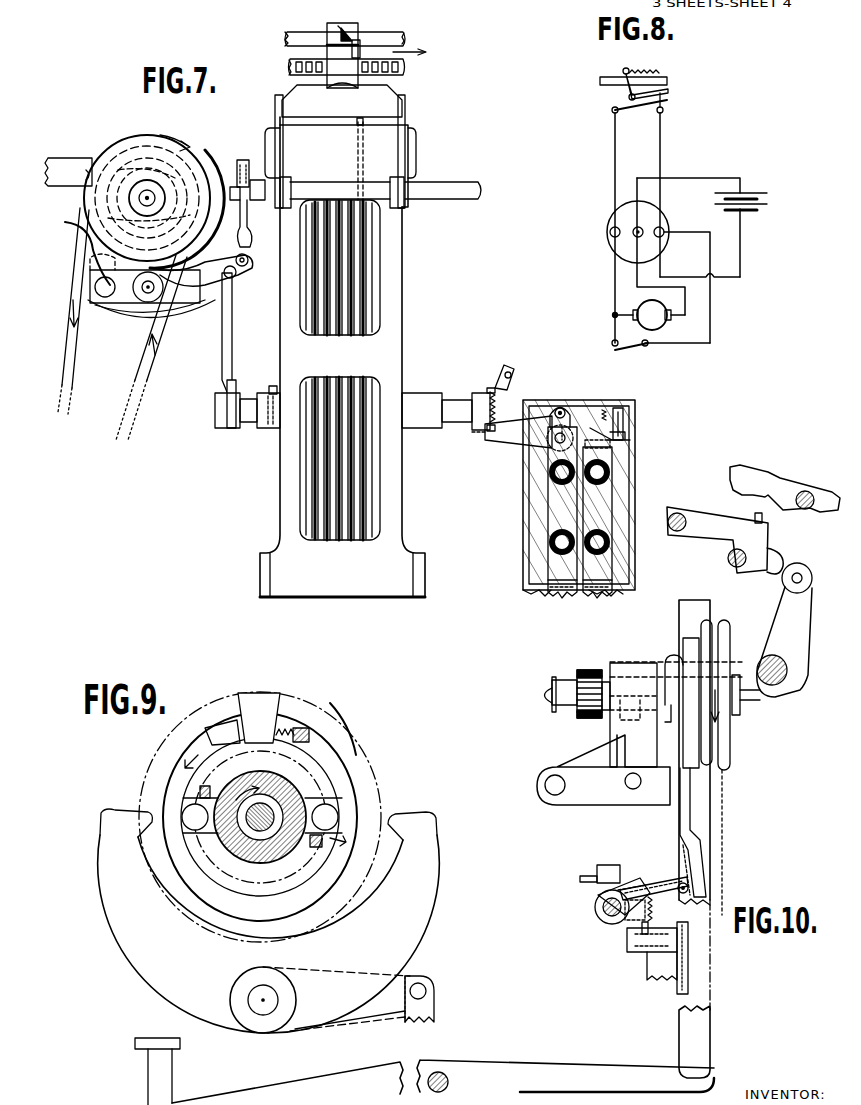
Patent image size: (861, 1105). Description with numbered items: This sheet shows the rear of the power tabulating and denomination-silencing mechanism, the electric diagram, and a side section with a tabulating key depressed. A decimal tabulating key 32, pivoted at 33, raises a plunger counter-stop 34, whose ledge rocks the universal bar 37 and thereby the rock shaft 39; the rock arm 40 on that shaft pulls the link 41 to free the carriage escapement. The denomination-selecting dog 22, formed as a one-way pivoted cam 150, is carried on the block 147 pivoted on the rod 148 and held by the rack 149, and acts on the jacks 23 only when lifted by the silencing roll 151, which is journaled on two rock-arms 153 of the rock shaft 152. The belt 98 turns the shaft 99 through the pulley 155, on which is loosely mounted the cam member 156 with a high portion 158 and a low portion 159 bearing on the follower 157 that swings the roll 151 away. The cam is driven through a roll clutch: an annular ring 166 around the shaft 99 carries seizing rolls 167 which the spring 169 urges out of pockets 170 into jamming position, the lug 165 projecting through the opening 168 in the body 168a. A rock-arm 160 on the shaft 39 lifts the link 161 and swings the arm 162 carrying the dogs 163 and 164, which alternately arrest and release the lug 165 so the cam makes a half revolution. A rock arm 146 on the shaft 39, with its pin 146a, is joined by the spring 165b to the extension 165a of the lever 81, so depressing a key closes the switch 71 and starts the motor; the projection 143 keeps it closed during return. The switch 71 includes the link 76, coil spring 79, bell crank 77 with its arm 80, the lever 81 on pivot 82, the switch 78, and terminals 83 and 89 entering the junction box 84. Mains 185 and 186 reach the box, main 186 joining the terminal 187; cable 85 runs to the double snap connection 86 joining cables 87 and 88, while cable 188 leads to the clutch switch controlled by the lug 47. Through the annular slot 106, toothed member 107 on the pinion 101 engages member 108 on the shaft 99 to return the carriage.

In FIG. 7, the one-way pivoted cam 150 is at (346, 31).
In FIG. 7, the rod 148 is at (406, 42).
In FIG. 10, the rod 148 is at (680, 516).
In FIG. 7, the block 147 is at (344, 55).
In FIG. 10, the block 147 is at (725, 540).
In FIG. 7, the rack 149 is at (405, 68).
In FIG. 10, the rack 149 is at (730, 558).
In FIG. 7, the silencing roll 151 is at (342, 101).
In FIG. 10, the silencing roll 151 is at (803, 570).
In FIG. 7, the rock-arms 153 is at (277, 112).
In FIG. 10, the rock-arms 153 is at (776, 643).
In FIG. 7, the plunger counter-stops 34 is at (356, 128).
In FIG. 10, the plunger counter-stops 34 is at (705, 868).
In FIG. 7, the rock shaft 152 is at (448, 199).
In FIG. 10, the rock shaft 152 is at (773, 683).
In FIG. 7, the pulley 155 is at (122, 150).
In FIG. 10, the pulley 155 is at (731, 735).
In FIG. 7, the cam member 156 is at (147, 198).
In FIG. 10, the cam member 156 is at (675, 658).
In FIG. 7, the high portion 158 is at (129, 198).
In FIG. 9, the high portion 158 is at (296, 925).
In FIG. 7, the low portion 159 is at (159, 198).
In FIG. 9, the low portion 159 is at (221, 732).
In FIG. 7, the follower 157 is at (80, 190).
In FIG. 10, the follower 157 is at (683, 680).
In FIG. 7, the shaft 99 is at (147, 205).
In FIG. 9, the shaft 99 is at (262, 862).
In FIG. 7, the lug 165 is at (185, 215).
In FIG. 9, the lug 165 is at (259, 718).
In FIG. 7, the dog 163 is at (240, 180).
In FIG. 9, the dog 163 is at (353, 922).
In FIG. 7, the dog 164 is at (70, 240).
In FIG. 9, the dog 164 is at (183, 921).
In FIG. 10, the dog 164 is at (690, 730).
In FIG. 7, the arm 162 is at (210, 302).
In FIG. 9, the arm 162 is at (380, 1010).
In FIG. 7, the link 161 is at (236, 323).
In FIG. 9, the link 161 is at (436, 1006).
In FIG. 10, the link 161 is at (700, 846).
In FIG. 7, the belt 98 is at (150, 374).
In FIG. 10, the belt 98 is at (724, 778).
In FIG. 7, the rock-arm 160 is at (236, 402).
In FIG. 10, the rock-arm 160 is at (660, 878).
In FIG. 7, the link 41 is at (273, 387).
In FIG. 7, the rock shaft 39 is at (232, 428).
In FIG. 10, the rock shaft 39 is at (610, 920).
In FIG. 7, the rock arm 40 is at (266, 428).
In FIG. 7, the rock arm 146 is at (488, 392).
In FIG. 10, the rock arm 146 is at (618, 870).
In FIG. 7, the pin 146a is at (510, 372).
In FIG. 10, the pin 146a is at (590, 880).
In FIG. 7, the spring 165b is at (446, 421).
In FIG. 7, the extension 165a is at (505, 440).
In FIG. 7, the bell crank projection 143 is at (566, 400).
In FIG. 10, the bell crank projection 143 is at (630, 925).
In FIG. 7, the coil spring 79 is at (606, 408).
In FIG. 8, the coil spring 79 is at (645, 72).
In FIG. 7, the lever 81 is at (575, 428).
In FIG. 7, the link 76 is at (626, 416).
In FIG. 8, the link 76 is at (606, 77).
In FIG. 7, the bell crank 77 is at (630, 434).
In FIG. 8, the bell crank 77 is at (628, 97).
In FIG. 7, the pivot 82 is at (556, 443).
In FIG. 10, the pivot 82 is at (650, 950).
In FIG. 7, the switch 78 is at (590, 502).
In FIG. 8, the switch 78 is at (658, 142).
In FIG. 7, the electric terminal 83 is at (556, 600).
In FIG. 8, the electric terminal 83 is at (610, 238).
In FIG. 10, the electric terminal 83 is at (680, 985).
In FIG. 7, the terminal 89 is at (597, 600).
In FIG. 8, the terminal 89 is at (664, 237).
In FIG. 8, the arm 80 is at (665, 90).
In FIG. 8, the switch 71 is at (668, 103).
In FIG. 8, the main 186 is at (716, 170).
In FIG. 8, the junction box 84 is at (610, 218).
In FIG. 8, the terminal 187 is at (644, 228).
In FIG. 8, the main 185 is at (742, 258).
In FIG. 8, the cable 85 is at (614, 270).
In FIG. 8, the cable 88 is at (615, 312).
In FIG. 8, the double snap connection 86 is at (613, 315).
In FIG. 8, the cable 87 is at (614, 332).
In FIG. 8, the cable 188 is at (712, 318).
In FIG. 8, the lug / clutch switch 47 is at (635, 348).
In FIG. 9, the spring 169 is at (284, 724).
In FIG. 9, the opening 168 is at (300, 725).
In FIG. 9, the body 168a is at (325, 735).
In FIG. 10, the body 168a is at (700, 640).
In FIG. 9, the pockets 170 is at (260, 815).
In FIG. 9, the annular ring 166 is at (330, 775).
In FIG. 9, the seizing rolls 167 is at (262, 816).
In FIG. 9, the decimal tabulating keys 32 is at (178, 1044).
In FIG. 9, the pivot 33 is at (452, 1080).
In FIG. 10, the jacks 23 is at (785, 488).
In FIG. 10, the tappet or dog 22 is at (764, 518).
In FIG. 10, the pinion 101 is at (585, 670).
In FIG. 10, the annular slot 106 is at (558, 705).
In FIG. 10, the toothed clutch member 107 is at (612, 708).
In FIG. 10, the toothed clutch member 108 is at (630, 712).
In FIG. 10, the universal bar 37 is at (690, 888).